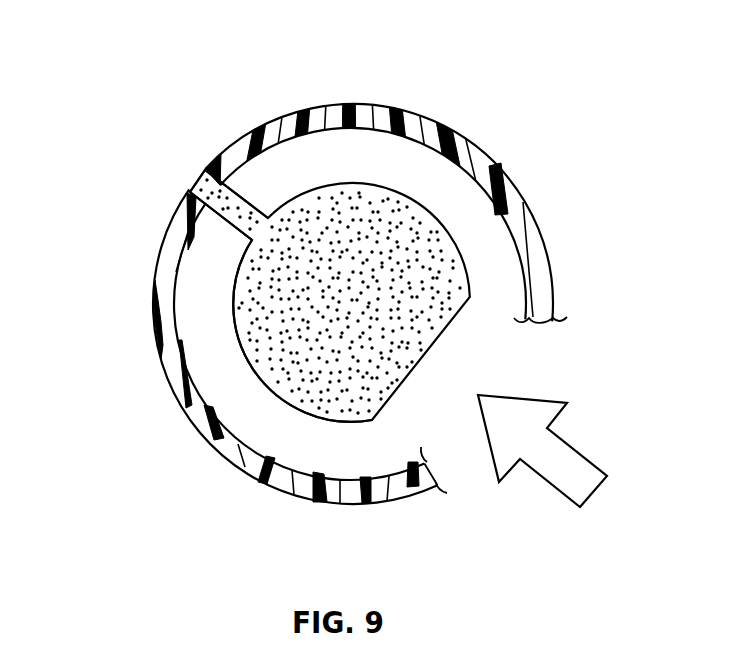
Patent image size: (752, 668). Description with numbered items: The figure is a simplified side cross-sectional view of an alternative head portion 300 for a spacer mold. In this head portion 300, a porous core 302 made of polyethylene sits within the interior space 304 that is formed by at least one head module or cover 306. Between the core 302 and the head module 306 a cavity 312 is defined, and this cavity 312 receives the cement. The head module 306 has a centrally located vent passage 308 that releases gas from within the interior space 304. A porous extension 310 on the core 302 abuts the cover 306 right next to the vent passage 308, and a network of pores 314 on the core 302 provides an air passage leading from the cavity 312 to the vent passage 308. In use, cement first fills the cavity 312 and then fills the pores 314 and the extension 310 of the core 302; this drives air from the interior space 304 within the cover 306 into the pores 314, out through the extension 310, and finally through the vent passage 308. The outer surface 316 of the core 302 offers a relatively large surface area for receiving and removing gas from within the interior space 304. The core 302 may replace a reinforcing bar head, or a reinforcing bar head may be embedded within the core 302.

The head portion 300 is at (151, 33).
The porous core 302 is at (397, 201).
The interior space 304 is at (280, 463).
The head module 306 is at (372, 104).
The vent passage 308 is at (247, 217).
The porous extension 310 is at (309, 124).
The cavity 312 is at (196, 238).
The network of pores 314 is at (428, 302).
The outer surface 316 is at (258, 387).